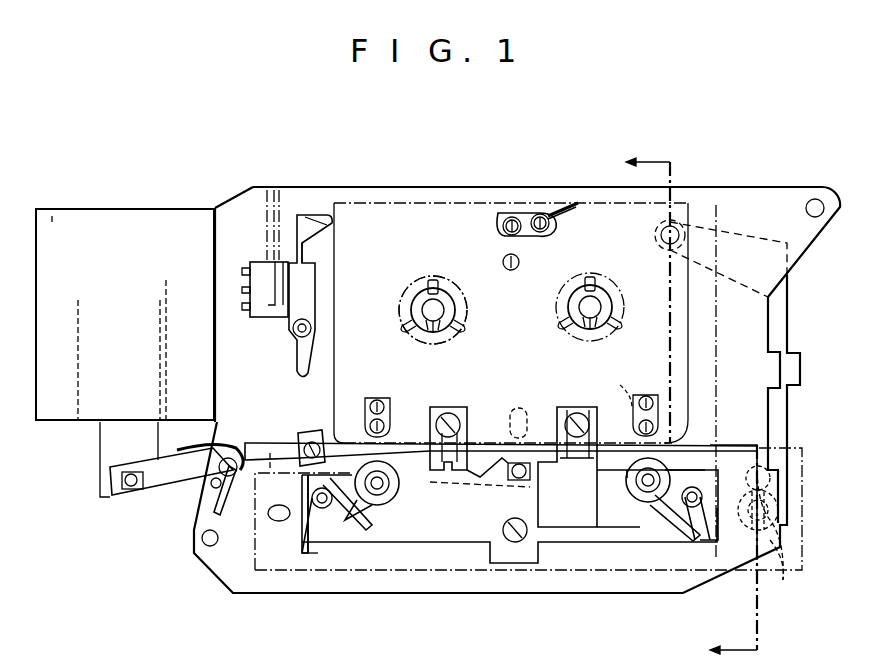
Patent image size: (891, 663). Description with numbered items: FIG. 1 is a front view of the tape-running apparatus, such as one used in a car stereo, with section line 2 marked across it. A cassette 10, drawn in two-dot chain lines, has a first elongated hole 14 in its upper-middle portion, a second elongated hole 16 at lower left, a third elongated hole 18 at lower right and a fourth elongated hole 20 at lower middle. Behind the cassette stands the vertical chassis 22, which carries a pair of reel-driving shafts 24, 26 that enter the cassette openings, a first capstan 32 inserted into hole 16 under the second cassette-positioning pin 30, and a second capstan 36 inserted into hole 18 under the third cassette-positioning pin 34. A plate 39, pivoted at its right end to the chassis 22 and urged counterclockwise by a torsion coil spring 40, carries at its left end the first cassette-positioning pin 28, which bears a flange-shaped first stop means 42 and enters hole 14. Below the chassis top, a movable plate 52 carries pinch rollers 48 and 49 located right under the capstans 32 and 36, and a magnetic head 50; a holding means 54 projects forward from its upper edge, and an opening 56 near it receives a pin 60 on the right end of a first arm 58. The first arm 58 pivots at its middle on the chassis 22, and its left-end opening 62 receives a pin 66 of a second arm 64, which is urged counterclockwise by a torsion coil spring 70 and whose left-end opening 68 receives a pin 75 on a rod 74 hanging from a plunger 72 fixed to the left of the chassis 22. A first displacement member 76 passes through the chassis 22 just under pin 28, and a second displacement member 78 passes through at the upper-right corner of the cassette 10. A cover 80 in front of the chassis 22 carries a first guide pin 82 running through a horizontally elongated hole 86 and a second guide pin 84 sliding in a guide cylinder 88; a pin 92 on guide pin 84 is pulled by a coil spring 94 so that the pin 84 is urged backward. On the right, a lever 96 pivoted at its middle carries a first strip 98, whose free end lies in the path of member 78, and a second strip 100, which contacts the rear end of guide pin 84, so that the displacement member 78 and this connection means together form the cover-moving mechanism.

The section line 2- 2 is at (682, 407).
The cassette 10 is at (430, 203).
The first elongated hole 14 is at (505, 212).
The second elongated hole 16 is at (385, 424).
The third elongated hole 18 is at (616, 388).
The fourth elongated hole 20 is at (524, 408).
The chassis 22 is at (805, 198).
The reel-driving shaft 24 is at (437, 332).
The reel-driving shaft 26 is at (597, 300).
The first cassette-positioning pin 28 is at (503, 232).
The second cassette-positioning pin 30 is at (380, 400).
The first capstan 32 is at (368, 410).
The third cassette-positioning pin 34 is at (645, 396).
The second capstan 36 is at (638, 425).
The plate 39 is at (538, 232).
The torsion coil spring 40 is at (567, 214).
The first stop means 42 is at (468, 296).
The pinch roller 48 is at (396, 502).
The pinch roller 49 is at (636, 488).
The magnetic head 50 is at (582, 522).
The plate 52 is at (455, 545).
The holding means 54 is at (474, 472).
The opening 56 is at (538, 490).
The first arm 58 is at (298, 435).
The pin 60 is at (518, 481).
The opening 62 is at (297, 440).
The second arm 64 is at (236, 452).
The pin 66 is at (313, 442).
The opening 68 is at (130, 490).
The torsion coil spring 70 is at (222, 510).
The plunger 72 is at (130, 232).
The rod 74 is at (100, 455).
The pin 75 is at (144, 476).
The first displacement member 76 is at (514, 270).
The second displacement member 78 is at (662, 243).
The cover 80 is at (795, 550).
The first guide pin 82 is at (292, 522).
The second guide pin 84 is at (758, 525).
The hole 86 is at (280, 505).
The guide cylinder 88 is at (748, 474).
The pin 92 is at (748, 455).
The coil spring 94 is at (772, 486).
The lever 96 is at (790, 414).
The first strip 98 is at (720, 262).
The second strip 100 is at (793, 574).